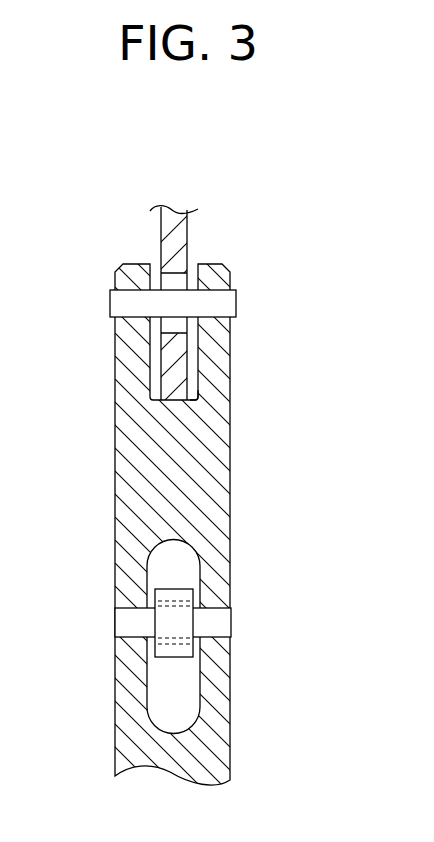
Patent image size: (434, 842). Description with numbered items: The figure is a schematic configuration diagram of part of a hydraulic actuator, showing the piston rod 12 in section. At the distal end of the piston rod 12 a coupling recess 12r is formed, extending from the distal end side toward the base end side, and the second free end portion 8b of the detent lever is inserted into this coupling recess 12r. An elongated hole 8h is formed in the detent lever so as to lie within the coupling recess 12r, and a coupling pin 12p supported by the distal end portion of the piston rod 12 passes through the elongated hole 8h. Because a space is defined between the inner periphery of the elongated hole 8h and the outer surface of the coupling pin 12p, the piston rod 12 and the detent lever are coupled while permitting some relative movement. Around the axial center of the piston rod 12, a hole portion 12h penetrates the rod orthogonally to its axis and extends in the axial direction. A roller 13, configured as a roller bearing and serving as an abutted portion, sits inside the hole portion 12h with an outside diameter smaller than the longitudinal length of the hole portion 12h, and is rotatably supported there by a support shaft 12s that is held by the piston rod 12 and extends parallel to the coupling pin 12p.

The piston rod 12 is at (103, 495).
The second free end portion 8b is at (175, 242).
The elongated hole 8h is at (157, 322).
The coupling pin 12p is at (123, 301).
The coupling recess 12r is at (195, 395).
The support shaft 12s is at (135, 623).
The roller 13 is at (194, 592).
The hole portion 12h is at (176, 692).